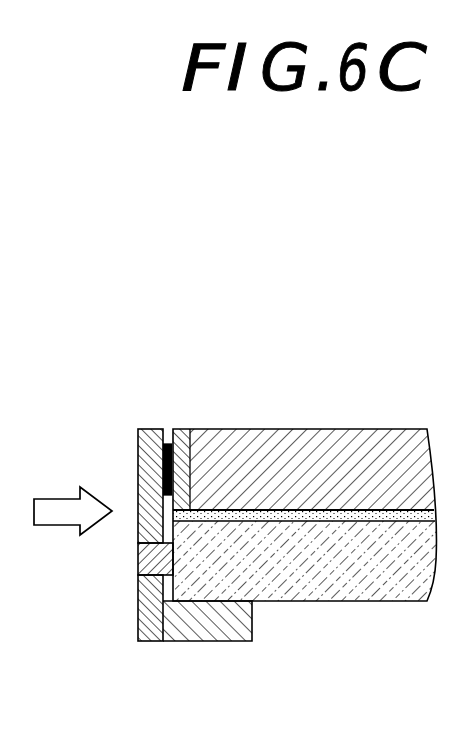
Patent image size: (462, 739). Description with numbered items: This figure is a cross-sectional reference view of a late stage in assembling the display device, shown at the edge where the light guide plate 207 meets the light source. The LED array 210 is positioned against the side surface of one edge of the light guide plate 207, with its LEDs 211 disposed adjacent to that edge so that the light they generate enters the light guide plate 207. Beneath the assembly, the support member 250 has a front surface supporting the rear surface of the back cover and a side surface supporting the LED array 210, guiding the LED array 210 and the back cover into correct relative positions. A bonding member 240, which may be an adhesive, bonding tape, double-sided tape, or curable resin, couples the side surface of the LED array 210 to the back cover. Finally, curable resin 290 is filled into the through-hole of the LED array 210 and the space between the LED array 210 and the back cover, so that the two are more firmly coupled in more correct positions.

The light guide plate 207 is at (230, 438).
The LEDs 211 is at (163, 453).
The curable resin 290 is at (147, 562).
The LED array 210 is at (146, 636).
The bonding member 240 is at (190, 606).
The support member 250 is at (237, 627).